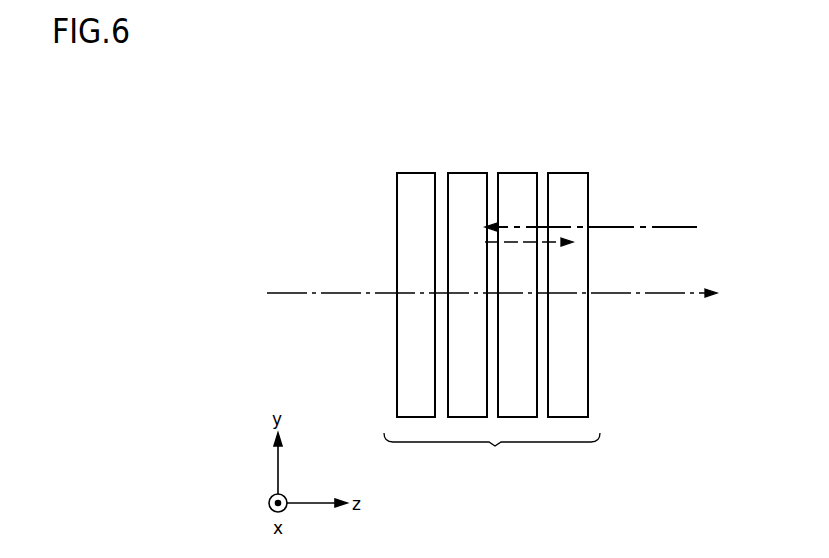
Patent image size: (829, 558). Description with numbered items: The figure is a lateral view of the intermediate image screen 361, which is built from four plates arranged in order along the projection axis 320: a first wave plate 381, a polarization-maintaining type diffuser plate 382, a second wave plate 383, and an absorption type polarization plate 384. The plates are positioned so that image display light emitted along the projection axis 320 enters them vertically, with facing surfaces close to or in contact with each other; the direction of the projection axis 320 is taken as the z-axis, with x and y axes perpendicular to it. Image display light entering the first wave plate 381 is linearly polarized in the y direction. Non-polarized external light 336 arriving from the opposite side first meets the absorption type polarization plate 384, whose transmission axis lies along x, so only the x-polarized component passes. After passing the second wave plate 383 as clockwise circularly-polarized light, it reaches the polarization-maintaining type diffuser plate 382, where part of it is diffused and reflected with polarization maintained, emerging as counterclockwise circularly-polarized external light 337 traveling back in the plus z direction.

The projection axis 320 is at (665, 294).
The external light 336 is at (675, 227).
The counterclockwise circularly-polarized external light 337 is at (558, 244).
The intermediate image screen 361 is at (492, 454).
The first wave plate 381 is at (420, 173).
The polarization-maintaining type diffuser plate 382 is at (477, 173).
The second wave plate 383 is at (527, 173).
The absorption type polarization plate 384 is at (571, 173).